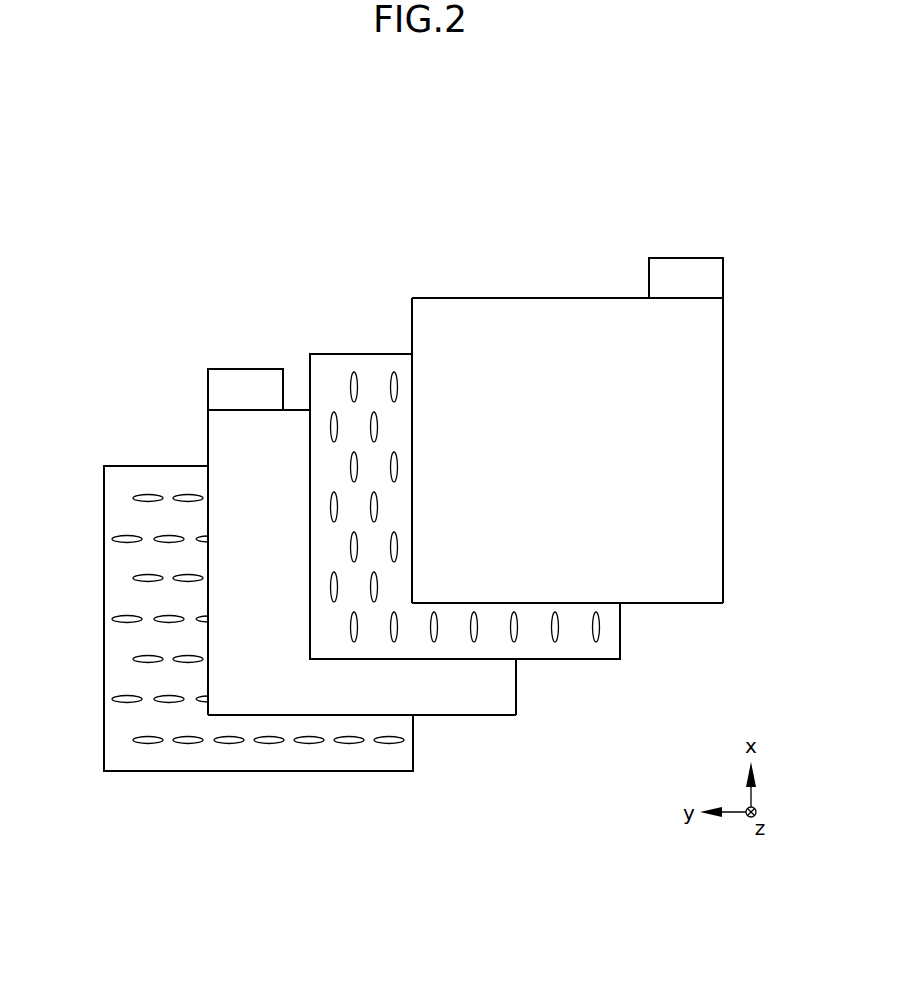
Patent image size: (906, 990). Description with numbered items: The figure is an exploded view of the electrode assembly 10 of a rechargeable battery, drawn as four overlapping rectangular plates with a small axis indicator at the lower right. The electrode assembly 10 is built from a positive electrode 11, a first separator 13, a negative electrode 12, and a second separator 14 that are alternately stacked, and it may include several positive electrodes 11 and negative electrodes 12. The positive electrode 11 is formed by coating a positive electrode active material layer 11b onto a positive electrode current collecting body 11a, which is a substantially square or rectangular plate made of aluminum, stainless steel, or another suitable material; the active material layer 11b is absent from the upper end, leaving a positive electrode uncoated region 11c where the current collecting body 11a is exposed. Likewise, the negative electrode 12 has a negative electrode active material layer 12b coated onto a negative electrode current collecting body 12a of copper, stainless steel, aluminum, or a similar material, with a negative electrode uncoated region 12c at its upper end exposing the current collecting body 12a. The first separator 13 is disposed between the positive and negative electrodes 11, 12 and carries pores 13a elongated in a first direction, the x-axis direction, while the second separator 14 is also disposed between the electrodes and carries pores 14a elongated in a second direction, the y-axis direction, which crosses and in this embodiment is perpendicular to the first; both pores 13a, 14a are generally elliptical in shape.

The electrode assembly 10 is at (285, 160).
The positive electrode 11 is at (186, 406).
The positive electrode current collecting body 11a is at (222, 370).
The positive electrode active material layer 11b is at (478, 705).
The positive electrode uncoated region 11c is at (266, 388).
The negative electrode 12 is at (503, 270).
The negative electrode current collecting body 12a is at (705, 257).
The negative electrode active material layer 12b is at (690, 590).
The negative electrode uncoated region 12c is at (670, 272).
The first separator 13 is at (545, 648).
The pore 13a is at (597, 642).
The second separator 14 is at (117, 480).
The pore 14a is at (123, 538).